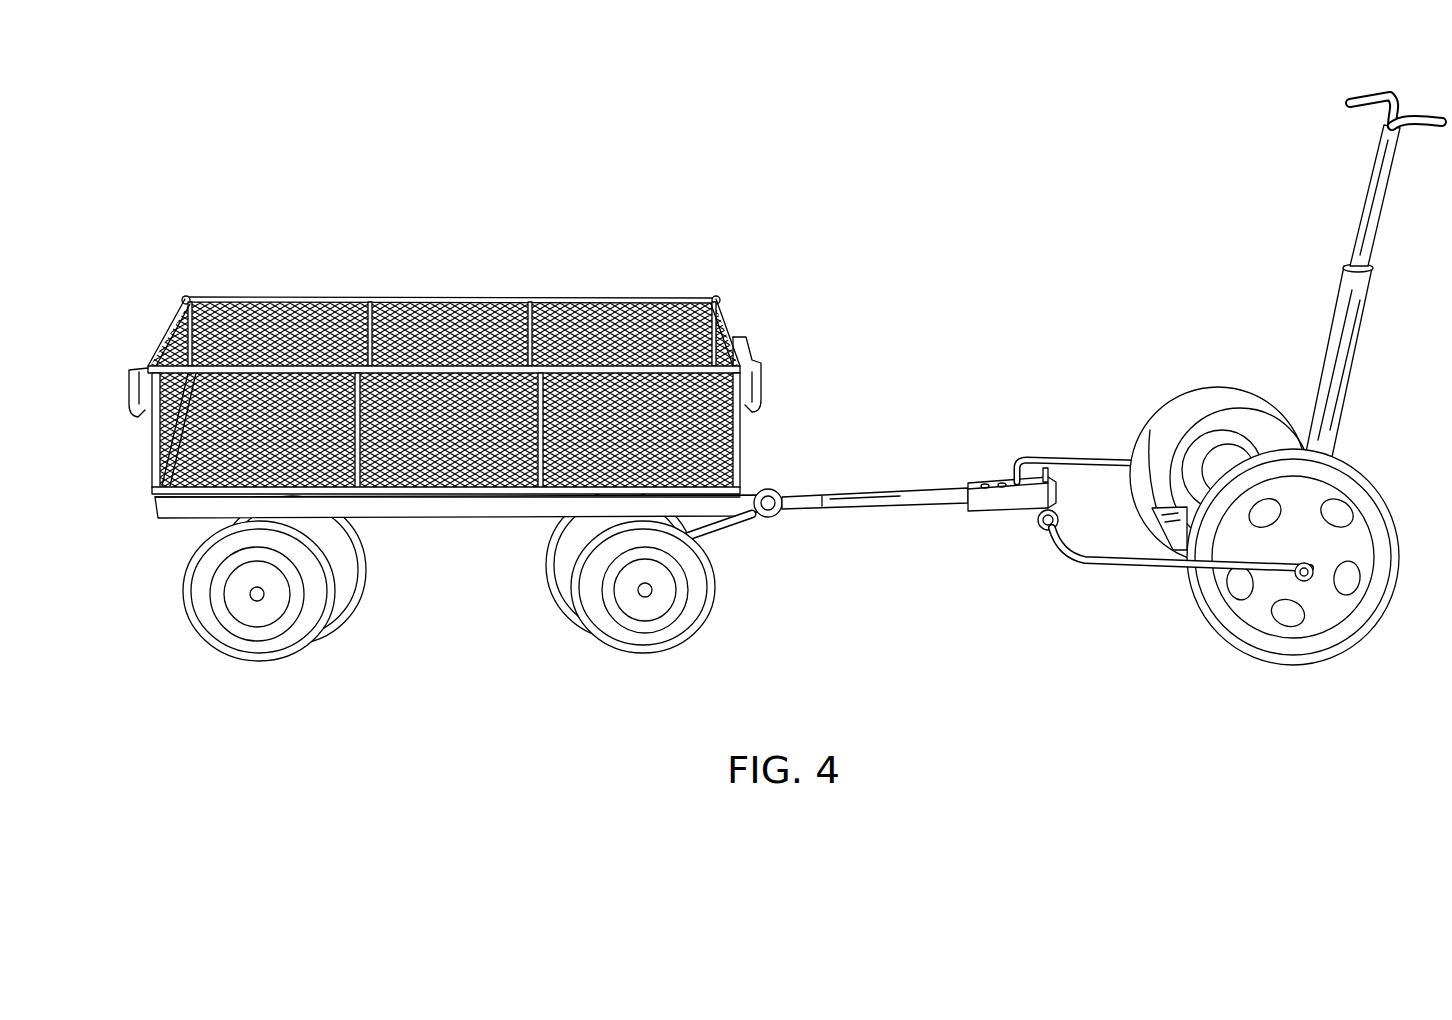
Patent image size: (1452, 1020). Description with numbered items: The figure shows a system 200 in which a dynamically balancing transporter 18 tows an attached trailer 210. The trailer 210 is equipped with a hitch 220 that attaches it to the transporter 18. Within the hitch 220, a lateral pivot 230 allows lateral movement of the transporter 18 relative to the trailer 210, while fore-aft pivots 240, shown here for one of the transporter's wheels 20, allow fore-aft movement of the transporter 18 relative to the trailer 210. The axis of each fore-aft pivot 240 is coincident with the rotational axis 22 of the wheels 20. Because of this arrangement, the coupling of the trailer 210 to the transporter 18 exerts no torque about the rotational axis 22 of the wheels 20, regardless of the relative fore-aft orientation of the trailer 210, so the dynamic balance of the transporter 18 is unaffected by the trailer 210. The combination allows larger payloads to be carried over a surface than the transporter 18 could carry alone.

The system 200 is at (548, 405).
The trailer 210 is at (455, 297).
The hitch 220 is at (1127, 416).
The lateral pivot 230 is at (1044, 468).
The fore-aft pivot 240 is at (1325, 548).
The wheels 20 is at (1268, 380).
The rotational axis 22 is at (1344, 618).
The dynamically balancing transporter 18 is at (1343, 272).